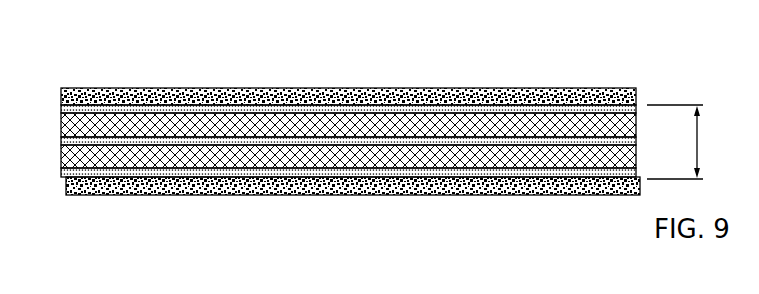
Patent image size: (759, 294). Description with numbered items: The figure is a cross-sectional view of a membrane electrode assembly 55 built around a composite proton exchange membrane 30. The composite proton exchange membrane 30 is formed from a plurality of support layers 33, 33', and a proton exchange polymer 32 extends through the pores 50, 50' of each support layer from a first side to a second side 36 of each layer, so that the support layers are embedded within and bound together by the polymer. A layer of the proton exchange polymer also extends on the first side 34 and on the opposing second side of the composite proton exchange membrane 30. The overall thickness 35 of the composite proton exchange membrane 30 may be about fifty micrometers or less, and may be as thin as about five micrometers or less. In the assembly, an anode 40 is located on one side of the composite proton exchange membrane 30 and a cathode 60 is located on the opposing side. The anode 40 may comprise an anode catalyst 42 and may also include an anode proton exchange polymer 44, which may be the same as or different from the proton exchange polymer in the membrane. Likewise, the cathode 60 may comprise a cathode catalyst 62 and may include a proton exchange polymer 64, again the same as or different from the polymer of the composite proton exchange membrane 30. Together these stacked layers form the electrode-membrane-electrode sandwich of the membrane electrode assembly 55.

The membrane electrode assembly 55 is at (160, 72).
The composite proton exchange membrane 30 is at (218, 132).
The anode 40 is at (270, 96).
The anode catalyst 42 is at (304, 94).
The anode proton exchange polymer 44 is at (345, 96).
The support layer 33' is at (348, 90).
The first side 34 is at (444, 102).
The pores 50 is at (348, 90).
The thickness 35 is at (688, 142).
The cathode 60 is at (163, 188).
The cathode catalyst 62 is at (193, 192).
The anode proton exchange polymer 64 is at (242, 183).
The support layer 33 is at (348, 189).
The second side 36 is at (392, 180).
The proton exchange polymer 32 is at (472, 153).
The pores 50' is at (348, 192).